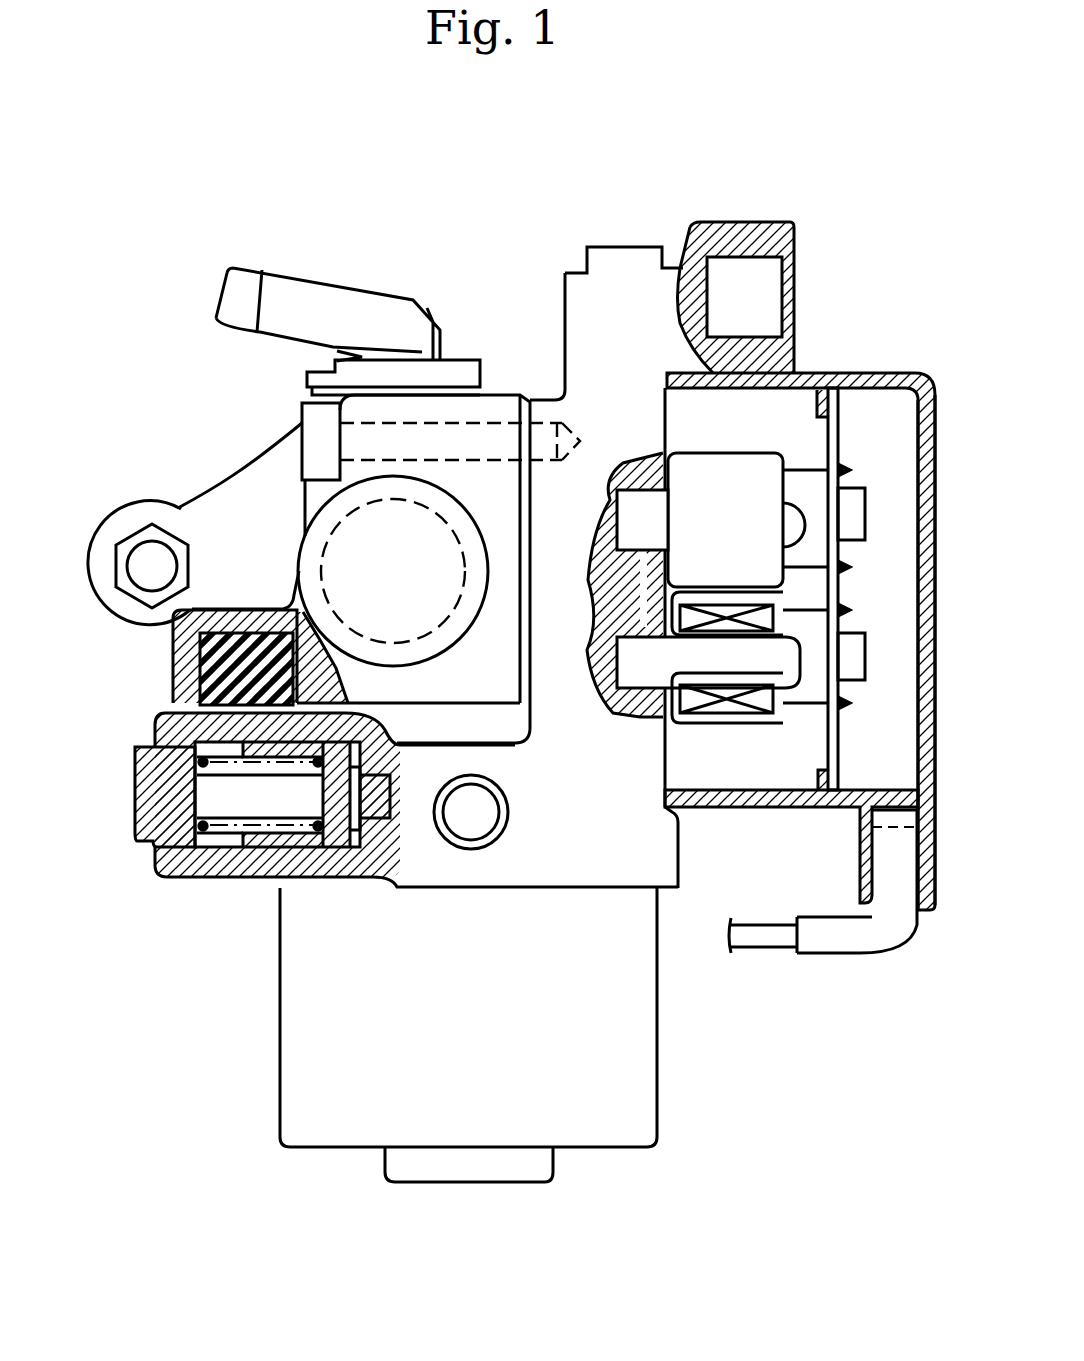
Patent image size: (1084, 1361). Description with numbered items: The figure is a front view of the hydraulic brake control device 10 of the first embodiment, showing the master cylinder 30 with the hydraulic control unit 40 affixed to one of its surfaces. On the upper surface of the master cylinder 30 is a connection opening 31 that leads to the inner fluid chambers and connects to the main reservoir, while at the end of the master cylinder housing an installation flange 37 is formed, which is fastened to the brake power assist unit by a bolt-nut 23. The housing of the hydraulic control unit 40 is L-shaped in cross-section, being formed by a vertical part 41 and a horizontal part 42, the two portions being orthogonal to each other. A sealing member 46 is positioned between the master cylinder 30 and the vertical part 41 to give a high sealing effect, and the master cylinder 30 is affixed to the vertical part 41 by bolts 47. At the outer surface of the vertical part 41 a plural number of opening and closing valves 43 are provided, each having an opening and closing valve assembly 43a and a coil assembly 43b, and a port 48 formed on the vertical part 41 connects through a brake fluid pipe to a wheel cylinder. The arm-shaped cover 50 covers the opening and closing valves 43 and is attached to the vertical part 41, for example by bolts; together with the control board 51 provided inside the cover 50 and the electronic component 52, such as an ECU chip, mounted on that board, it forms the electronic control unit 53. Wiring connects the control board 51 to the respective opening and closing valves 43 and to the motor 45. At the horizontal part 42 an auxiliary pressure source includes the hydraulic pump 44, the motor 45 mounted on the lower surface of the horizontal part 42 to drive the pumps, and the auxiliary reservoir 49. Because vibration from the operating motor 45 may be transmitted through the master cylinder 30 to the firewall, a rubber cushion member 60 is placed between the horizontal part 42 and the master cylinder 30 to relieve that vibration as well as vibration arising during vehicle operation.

The hydraulic brake control device 10 is at (275, 243).
The bolt-nut 23 is at (140, 590).
The master cylinder 30 is at (298, 535).
The connection opening 31 is at (393, 296).
The installation flange 37 is at (202, 502).
The hydraulic control unit 40 is at (678, 888).
The vertical part 41 is at (575, 320).
The horizontal part 42 is at (245, 890).
The opening and closing valve 43 is at (742, 537).
The opening and closing valve assembly 43a is at (753, 670).
The coil assembly 43b is at (718, 705).
The hydraulic pump 44 is at (490, 823).
The motor 45 is at (635, 1142).
The sealing member 46 is at (527, 650).
The bolt 47 is at (302, 412).
The port 48 is at (773, 277).
The auxiliary reservoir 49 is at (145, 850).
The cover 50 is at (883, 373).
The control board 51 is at (836, 447).
The electronic component 52 is at (863, 523).
The electronic control unit 53 is at (924, 378).
The cushion member 60 is at (210, 667).